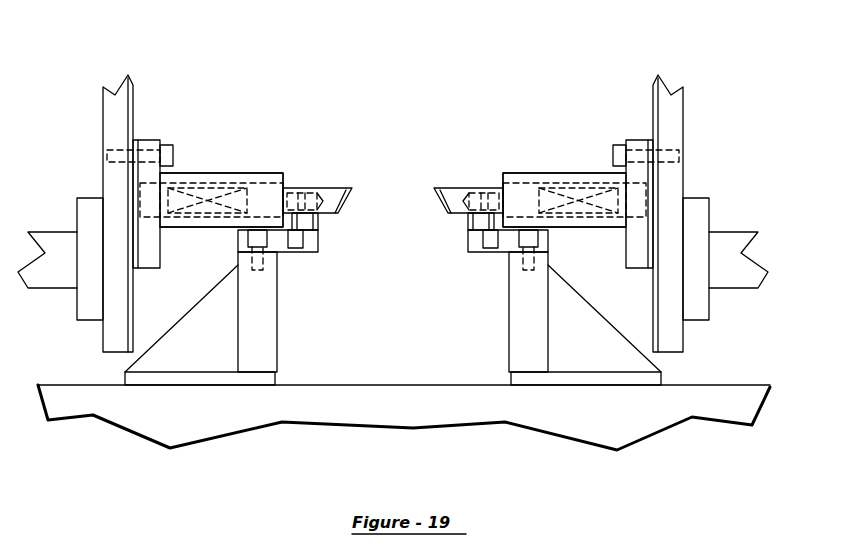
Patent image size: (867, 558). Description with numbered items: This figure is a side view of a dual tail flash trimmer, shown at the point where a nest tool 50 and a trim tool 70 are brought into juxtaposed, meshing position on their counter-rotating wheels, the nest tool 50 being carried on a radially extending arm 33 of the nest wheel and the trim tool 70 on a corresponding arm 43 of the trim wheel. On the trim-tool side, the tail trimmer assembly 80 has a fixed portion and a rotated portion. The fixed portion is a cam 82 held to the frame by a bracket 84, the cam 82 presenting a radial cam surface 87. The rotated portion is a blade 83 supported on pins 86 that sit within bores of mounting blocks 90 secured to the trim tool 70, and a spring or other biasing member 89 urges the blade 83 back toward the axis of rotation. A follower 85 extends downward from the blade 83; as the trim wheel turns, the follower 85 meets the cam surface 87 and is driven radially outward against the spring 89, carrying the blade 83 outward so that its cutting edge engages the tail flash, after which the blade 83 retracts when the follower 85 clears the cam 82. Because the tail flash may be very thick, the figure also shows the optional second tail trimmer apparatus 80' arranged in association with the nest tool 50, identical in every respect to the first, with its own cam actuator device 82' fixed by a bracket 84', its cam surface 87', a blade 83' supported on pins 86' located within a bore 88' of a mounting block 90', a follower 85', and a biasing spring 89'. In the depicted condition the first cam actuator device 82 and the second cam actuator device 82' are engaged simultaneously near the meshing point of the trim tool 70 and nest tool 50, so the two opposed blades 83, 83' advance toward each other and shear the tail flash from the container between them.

The nest tool 50 is at (67, 141).
The trim tool 70 is at (728, 96).
The arm 33 is at (58, 245).
The arm 43 is at (733, 245).
The tail trimmer assembly 80 is at (549, 307).
The second tail trimmer apparatus 80' is at (241, 307).
The cam 82 is at (507, 273).
The second cam actuator device 82' is at (281, 268).
The blade 83 is at (460, 222).
The blade 83' is at (332, 223).
The bracket 84 is at (604, 318).
The bracket 84' is at (181, 318).
The follower 85 is at (457, 251).
The follower 85' is at (328, 252).
The pin 86 is at (564, 156).
The pin 86' is at (221, 125).
The cam surface 87 is at (460, 156).
The cam surface 87' is at (340, 165).
The bore 88' is at (393, 124).
The spring (biasing member) 89 is at (578, 227).
The spring (biasing member) 89' is at (207, 229).
The mounting block 90 is at (555, 144).
The mounting block 90' is at (221, 154).